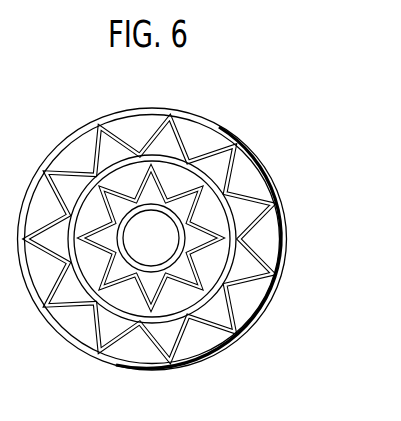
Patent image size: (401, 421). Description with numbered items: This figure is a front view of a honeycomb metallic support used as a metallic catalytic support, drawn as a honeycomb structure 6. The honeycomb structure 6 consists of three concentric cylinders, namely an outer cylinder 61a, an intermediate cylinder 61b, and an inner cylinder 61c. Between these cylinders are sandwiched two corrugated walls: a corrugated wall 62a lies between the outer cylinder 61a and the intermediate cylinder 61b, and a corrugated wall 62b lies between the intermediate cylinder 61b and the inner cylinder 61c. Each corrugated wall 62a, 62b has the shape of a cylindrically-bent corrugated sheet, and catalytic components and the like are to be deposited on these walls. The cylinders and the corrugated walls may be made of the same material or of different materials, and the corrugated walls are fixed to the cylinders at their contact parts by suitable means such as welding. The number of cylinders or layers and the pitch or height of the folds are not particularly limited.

The honeycomb structure 6 is at (239, 121).
The outer cylinder 61a is at (271, 294).
The intermediate cylinder 61b is at (238, 306).
The inner cylinder 61c is at (211, 338).
The corrugated wall 62a is at (274, 196).
The corrugated wall 62b is at (206, 262).